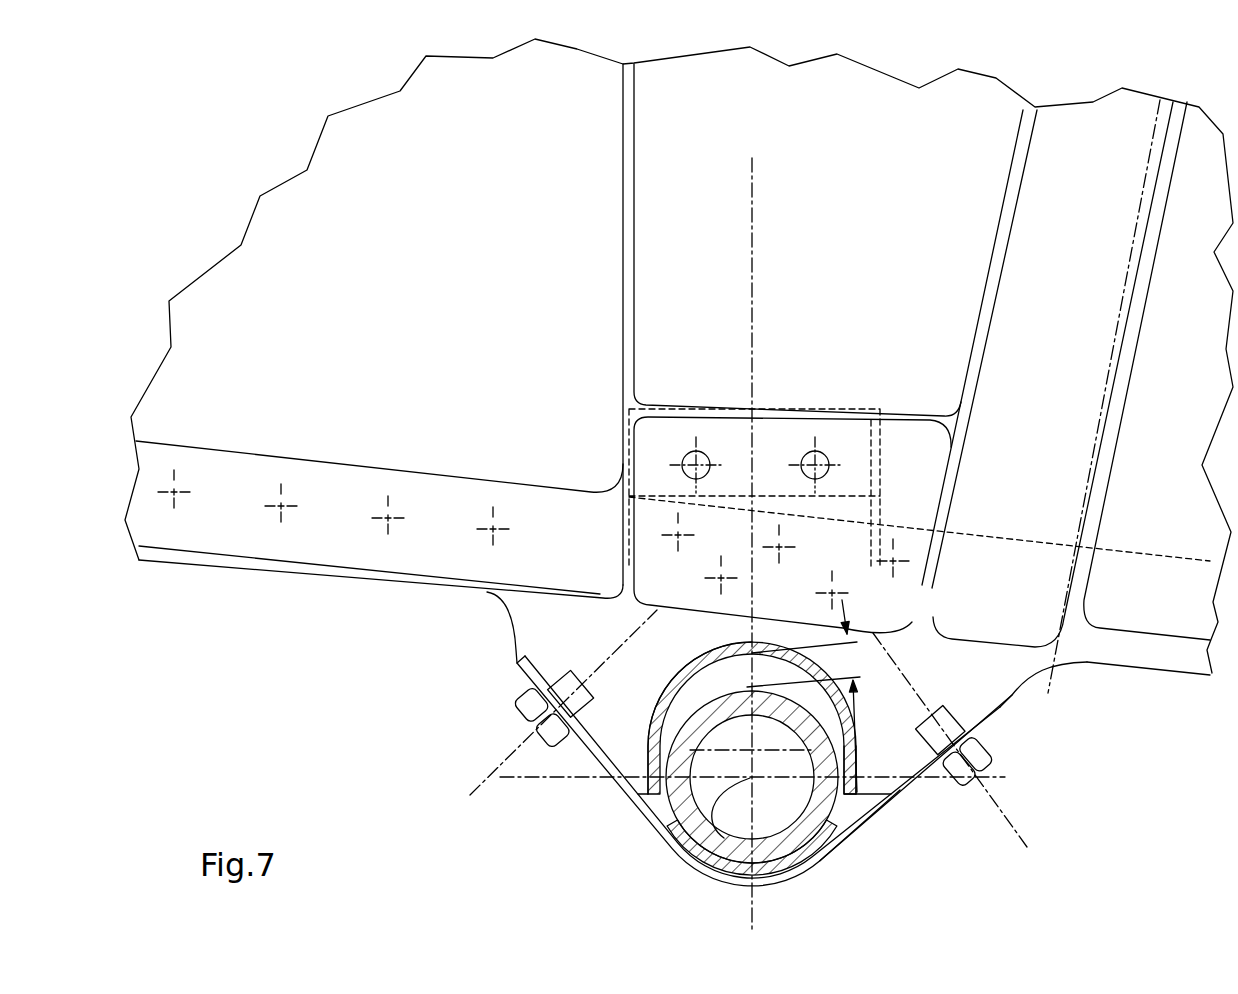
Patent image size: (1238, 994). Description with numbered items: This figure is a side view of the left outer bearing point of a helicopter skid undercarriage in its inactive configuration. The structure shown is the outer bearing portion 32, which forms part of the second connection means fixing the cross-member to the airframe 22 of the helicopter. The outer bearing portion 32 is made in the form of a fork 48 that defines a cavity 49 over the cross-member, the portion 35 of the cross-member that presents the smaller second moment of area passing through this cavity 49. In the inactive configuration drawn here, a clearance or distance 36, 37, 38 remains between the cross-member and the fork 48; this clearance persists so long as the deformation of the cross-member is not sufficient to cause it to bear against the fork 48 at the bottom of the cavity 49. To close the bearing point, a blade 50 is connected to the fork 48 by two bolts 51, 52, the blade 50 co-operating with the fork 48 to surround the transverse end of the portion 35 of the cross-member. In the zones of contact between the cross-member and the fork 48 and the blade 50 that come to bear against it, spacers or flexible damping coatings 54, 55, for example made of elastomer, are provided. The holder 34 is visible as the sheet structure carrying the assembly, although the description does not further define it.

The airframe 22 is at (619, 312).
The outer bearing portion 32 is at (773, 751).
The holder bracket 34 is at (707, 845).
The portion of the cross-member 35 is at (849, 712).
The clearance or distance 36 is at (850, 658).
The clearance or distance 37 is at (918, 615).
The clearance or distance 38 is at (871, 694).
The fork 48 is at (693, 651).
The cavity 49 is at (748, 686).
The blade 50 is at (782, 876).
The bolt 51 is at (518, 708).
The bolt 52 is at (985, 750).
The flexible damping coating 54 is at (690, 695).
The flexible damping coating 55 is at (855, 828).